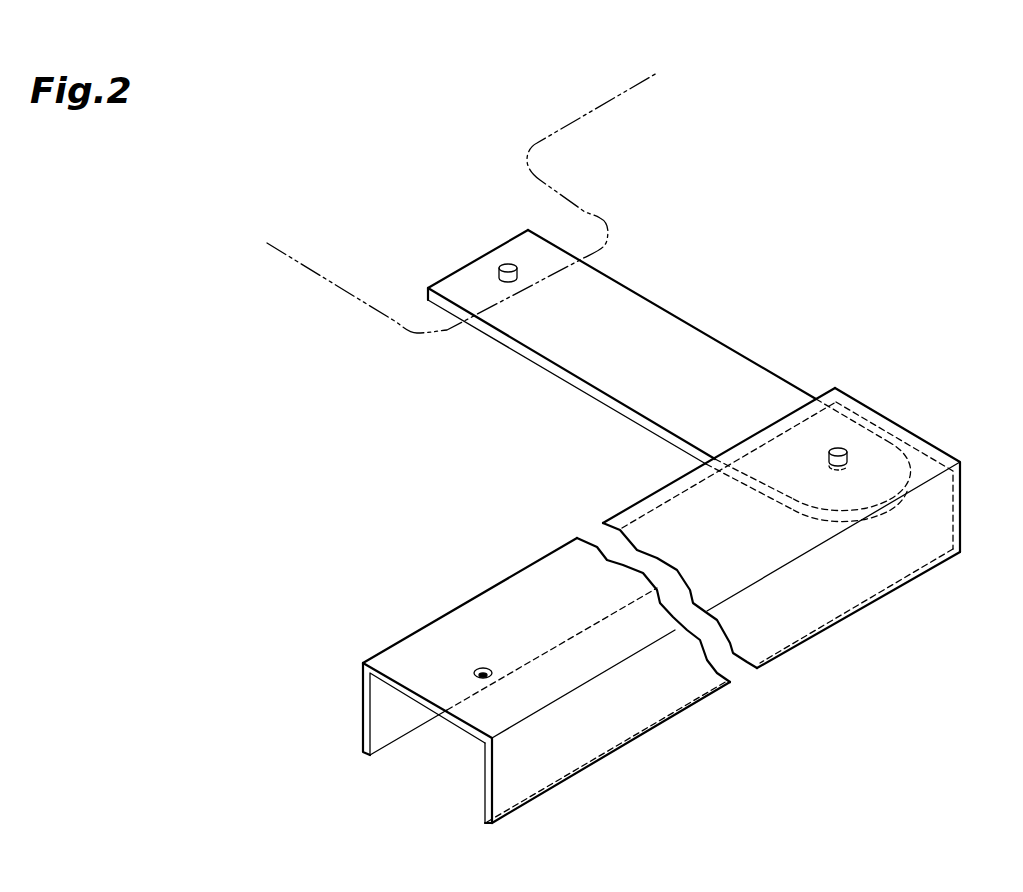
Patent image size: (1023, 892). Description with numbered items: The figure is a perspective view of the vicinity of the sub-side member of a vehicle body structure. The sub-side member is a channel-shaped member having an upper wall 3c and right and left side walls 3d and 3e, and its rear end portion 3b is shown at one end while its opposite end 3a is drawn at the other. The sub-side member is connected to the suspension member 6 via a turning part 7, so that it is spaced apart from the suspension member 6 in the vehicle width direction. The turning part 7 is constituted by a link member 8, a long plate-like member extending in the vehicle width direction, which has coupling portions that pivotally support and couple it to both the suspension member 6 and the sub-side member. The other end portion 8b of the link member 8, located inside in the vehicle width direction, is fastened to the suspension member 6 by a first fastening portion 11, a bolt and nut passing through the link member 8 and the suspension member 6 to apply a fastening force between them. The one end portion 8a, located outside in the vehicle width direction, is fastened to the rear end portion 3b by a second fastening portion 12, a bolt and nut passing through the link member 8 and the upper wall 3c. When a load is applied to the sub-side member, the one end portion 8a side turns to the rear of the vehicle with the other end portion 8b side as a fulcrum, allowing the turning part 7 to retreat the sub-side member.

The first end portion of channel member 3a is at (408, 654).
The rear end portion 3b is at (928, 459).
The upper wall 3c is at (505, 600).
The side wall 3d is at (387, 718).
The side wall 3e is at (482, 775).
The suspension member 6 is at (348, 297).
The turning part 7 is at (833, 223).
The link member 8 is at (703, 330).
The one end portion 8a is at (915, 447).
The other end portion 8b is at (468, 287).
The first fastening portion 11 is at (508, 262).
The second fastening portion 12 is at (841, 447).